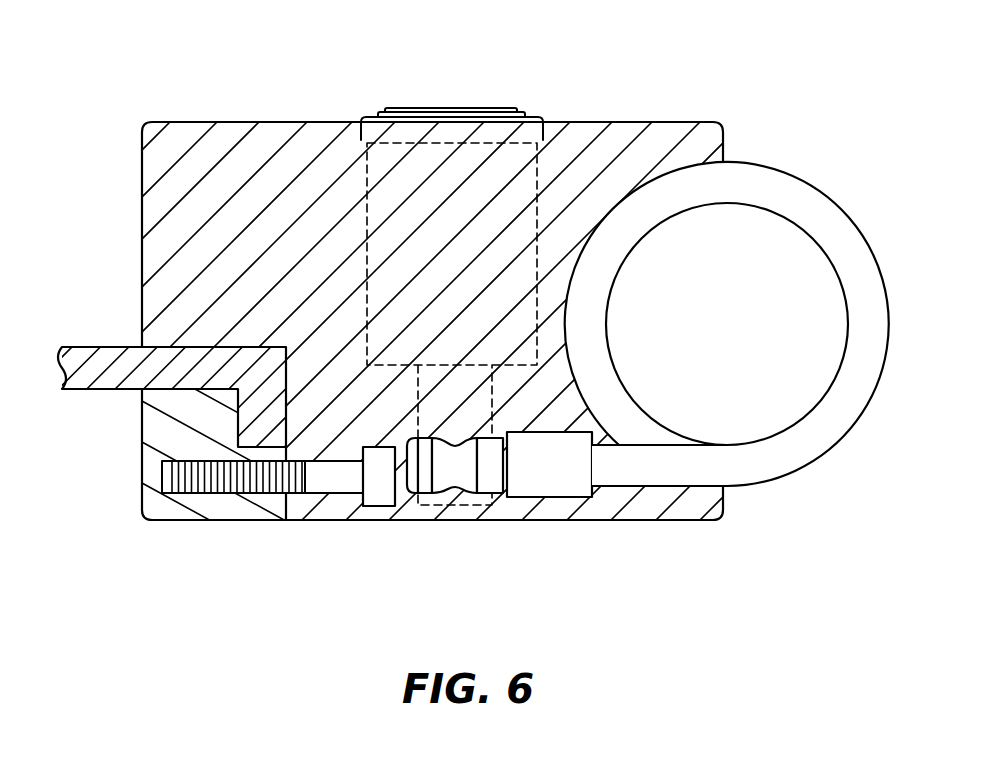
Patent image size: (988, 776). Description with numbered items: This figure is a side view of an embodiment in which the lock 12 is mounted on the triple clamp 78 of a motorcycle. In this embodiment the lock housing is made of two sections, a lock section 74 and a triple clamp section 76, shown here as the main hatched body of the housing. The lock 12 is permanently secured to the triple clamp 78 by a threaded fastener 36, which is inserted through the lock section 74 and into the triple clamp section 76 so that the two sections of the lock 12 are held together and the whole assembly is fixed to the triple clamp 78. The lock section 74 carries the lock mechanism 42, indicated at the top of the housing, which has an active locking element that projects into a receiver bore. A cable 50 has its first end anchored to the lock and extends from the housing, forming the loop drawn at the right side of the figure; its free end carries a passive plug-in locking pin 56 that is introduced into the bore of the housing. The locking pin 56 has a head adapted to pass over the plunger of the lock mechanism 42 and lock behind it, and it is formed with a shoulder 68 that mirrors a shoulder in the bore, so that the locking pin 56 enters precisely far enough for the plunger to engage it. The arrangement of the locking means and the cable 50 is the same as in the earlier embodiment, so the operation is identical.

The lock 12 is at (494, 319).
The threaded fastener 36 is at (327, 473).
The lock mechanism 42 is at (447, 173).
The cable 50 is at (727, 284).
The locking pin 56 is at (499, 464).
The shoulder 68 is at (615, 197).
The lock section 74 is at (218, 157).
The triple clamp section 76 is at (190, 507).
The triple clamp 78 is at (98, 347).